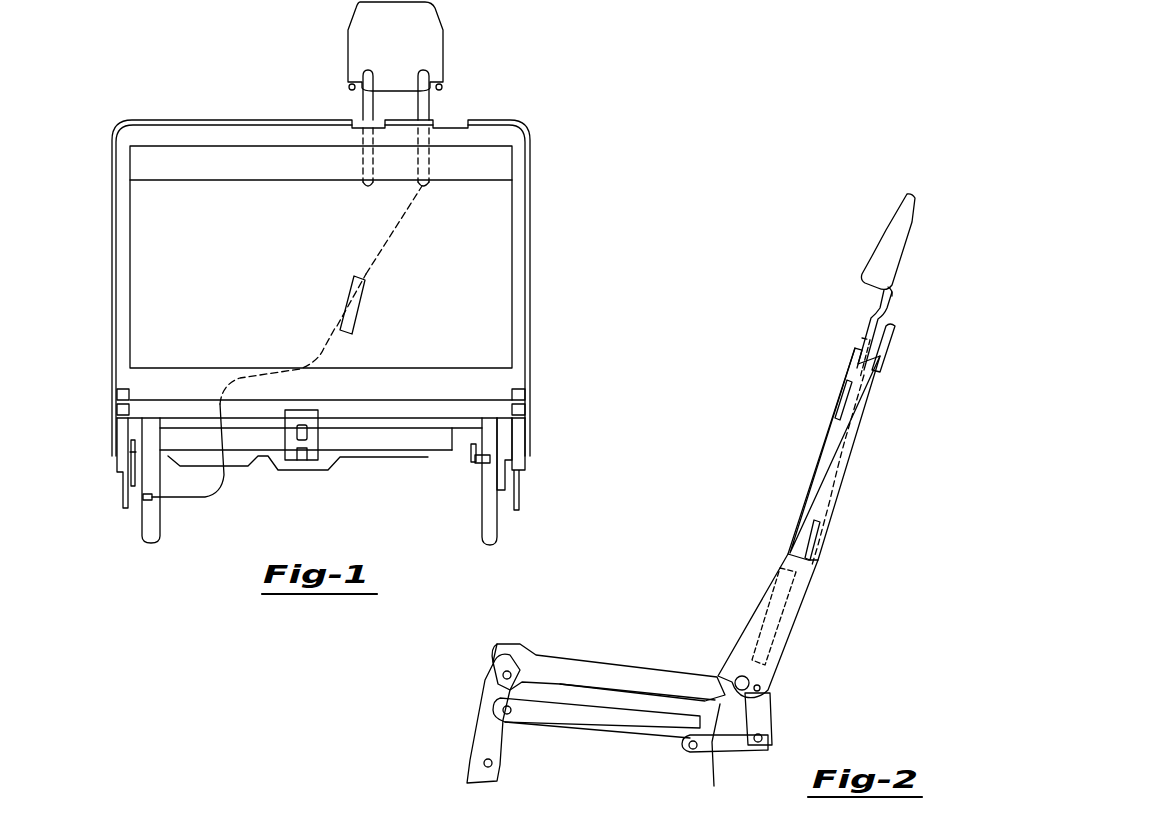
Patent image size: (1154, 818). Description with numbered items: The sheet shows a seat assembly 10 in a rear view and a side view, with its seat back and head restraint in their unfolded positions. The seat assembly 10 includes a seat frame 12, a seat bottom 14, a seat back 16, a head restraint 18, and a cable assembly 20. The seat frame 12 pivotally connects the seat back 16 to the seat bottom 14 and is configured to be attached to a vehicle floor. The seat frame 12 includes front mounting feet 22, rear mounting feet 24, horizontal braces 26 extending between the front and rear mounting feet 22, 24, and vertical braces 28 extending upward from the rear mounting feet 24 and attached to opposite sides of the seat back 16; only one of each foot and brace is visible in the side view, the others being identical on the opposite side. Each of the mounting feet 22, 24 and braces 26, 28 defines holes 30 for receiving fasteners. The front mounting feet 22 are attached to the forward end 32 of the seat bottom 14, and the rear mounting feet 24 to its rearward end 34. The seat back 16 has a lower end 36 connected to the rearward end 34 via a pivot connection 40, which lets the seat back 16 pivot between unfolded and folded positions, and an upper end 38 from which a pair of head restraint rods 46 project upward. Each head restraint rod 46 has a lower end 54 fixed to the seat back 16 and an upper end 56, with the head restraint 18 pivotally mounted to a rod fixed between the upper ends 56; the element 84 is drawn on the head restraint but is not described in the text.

In FIG. 1, the seat assembly 10 is at (568, 33).
In FIG. 2, the seat assembly 10 is at (935, 228).
In FIG. 1, the seat frame 12 is at (329, 467).
In FIG. 2, the seat frame 12 is at (410, 702).
In FIG. 1, the seat bottom 14 is at (418, 470).
In FIG. 2, the seat bottom 14 is at (569, 648).
In FIG. 1, the seat back 16 is at (361, 288).
In FIG. 2, the seat back 16 is at (824, 523).
In FIG. 1, the head restraint 18 is at (394, 46).
In FIG. 2, the head restraint 18 is at (843, 242).
In FIG. 1, the cable assembly 20 is at (420, 296).
In FIG. 2, the front mounting feet 22 is at (486, 742).
In FIG. 1, the rear mounting feet 24 is at (150, 536).
In FIG. 2, the rear mounting feet 24 is at (738, 742).
In FIG. 2, the horizontal braces 26 is at (592, 712).
In FIG. 2, the vertical braces 28 is at (780, 604).
In FIG. 2, the holes 30 is at (503, 675).
In FIG. 2, the forward end 32 is at (495, 652).
In FIG. 2, the rearward end 34 is at (698, 690).
In FIG. 2, the lower end 36 is at (711, 760).
In FIG. 2, the upper end 38 is at (878, 352).
In FIG. 2, the pivot connection 40 is at (742, 676).
In FIG. 1, the head restraint rods 46 is at (366, 107).
In FIG. 2, the head restraint rods 46 is at (872, 313).
In FIG. 1, the lower end 54 is at (368, 188).
In FIG. 2, the lower end 54 is at (880, 380).
In FIG. 1, the upper end 56 is at (350, 84).
In FIG. 2, the upper end 56 is at (893, 293).
In FIG. 1, the headrest cushion 84 is at (370, 33).
In FIG. 2, the headrest cushion 84 is at (877, 268).